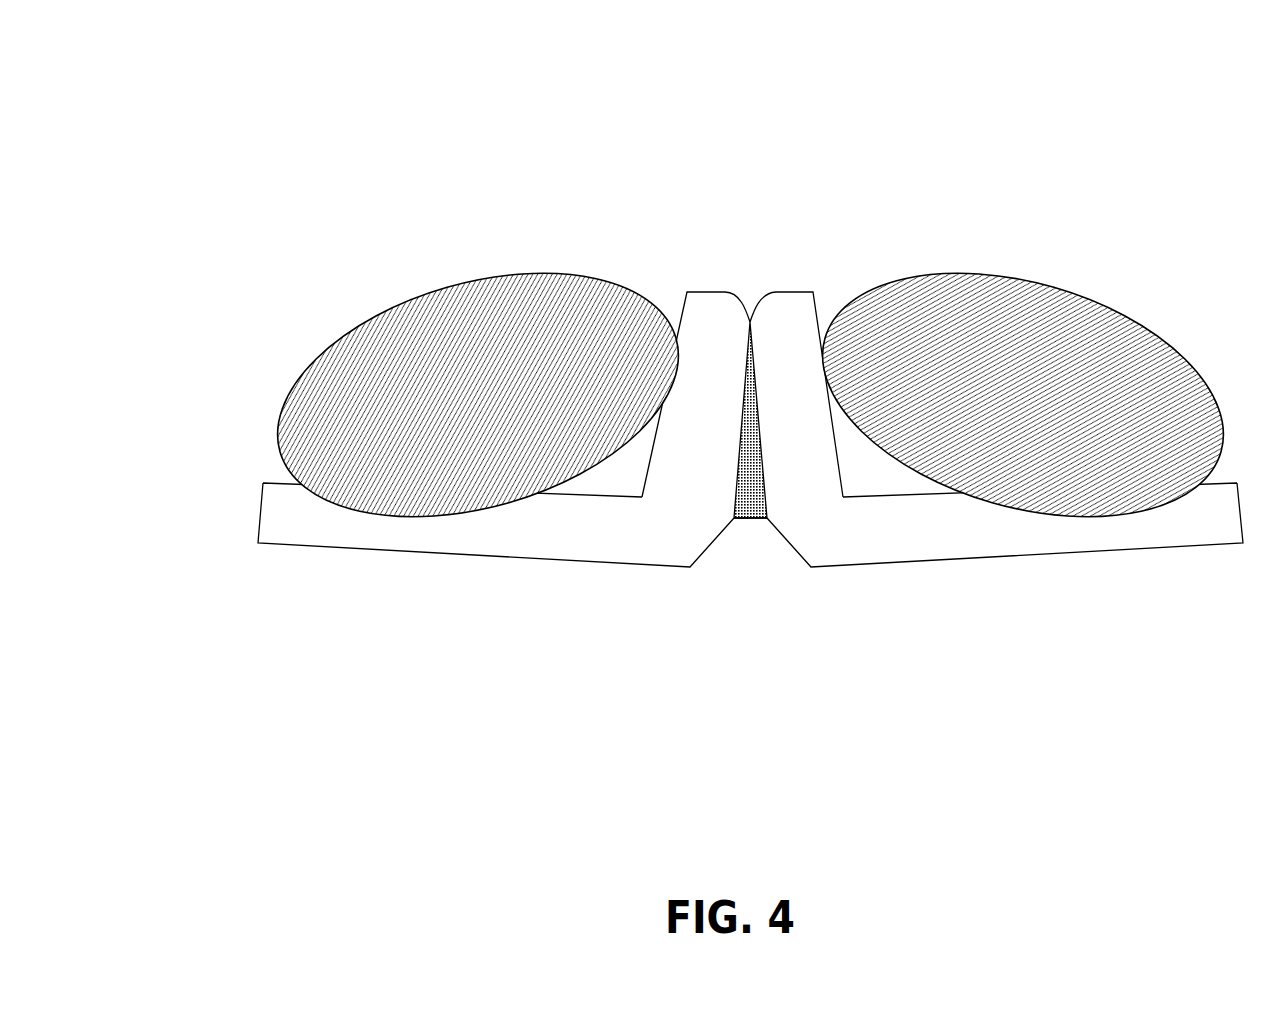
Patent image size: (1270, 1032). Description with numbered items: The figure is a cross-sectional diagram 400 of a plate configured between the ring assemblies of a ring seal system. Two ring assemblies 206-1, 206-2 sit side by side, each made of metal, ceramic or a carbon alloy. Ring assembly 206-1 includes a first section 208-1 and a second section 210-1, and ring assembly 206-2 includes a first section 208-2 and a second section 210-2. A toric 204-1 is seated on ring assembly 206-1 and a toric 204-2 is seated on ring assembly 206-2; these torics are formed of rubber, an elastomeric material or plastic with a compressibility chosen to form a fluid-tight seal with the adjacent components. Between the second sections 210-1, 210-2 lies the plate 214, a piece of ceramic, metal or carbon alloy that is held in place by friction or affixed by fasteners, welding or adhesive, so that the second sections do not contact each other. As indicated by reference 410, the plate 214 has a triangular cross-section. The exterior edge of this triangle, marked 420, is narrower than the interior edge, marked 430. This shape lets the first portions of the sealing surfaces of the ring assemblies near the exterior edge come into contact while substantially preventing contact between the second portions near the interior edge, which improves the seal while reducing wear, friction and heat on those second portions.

The cross-sectional diagram 400 is at (212, 35).
The toric 204-1 is at (546, 275).
The toric 204-2 is at (948, 275).
The second section 210-1 is at (710, 308).
The second section 210-2 is at (780, 308).
The first section 208-1 is at (438, 538).
The first section 208-2 is at (1018, 538).
The ring assembly 206-1 is at (523, 625).
The ring assembly 206-2 is at (915, 625).
The plate 214 is at (752, 522).
The triangular cross-section 410 is at (739, 537).
The exterior edge 420 is at (752, 308).
The interior edge 430 is at (790, 518).